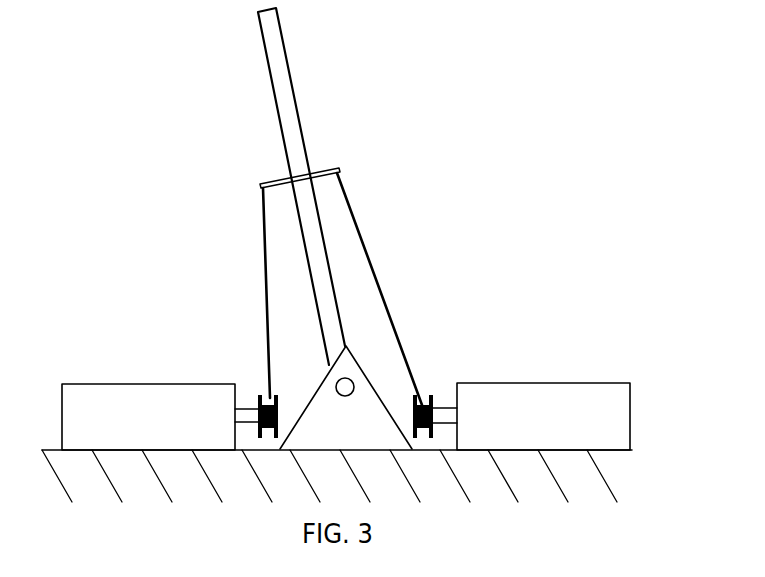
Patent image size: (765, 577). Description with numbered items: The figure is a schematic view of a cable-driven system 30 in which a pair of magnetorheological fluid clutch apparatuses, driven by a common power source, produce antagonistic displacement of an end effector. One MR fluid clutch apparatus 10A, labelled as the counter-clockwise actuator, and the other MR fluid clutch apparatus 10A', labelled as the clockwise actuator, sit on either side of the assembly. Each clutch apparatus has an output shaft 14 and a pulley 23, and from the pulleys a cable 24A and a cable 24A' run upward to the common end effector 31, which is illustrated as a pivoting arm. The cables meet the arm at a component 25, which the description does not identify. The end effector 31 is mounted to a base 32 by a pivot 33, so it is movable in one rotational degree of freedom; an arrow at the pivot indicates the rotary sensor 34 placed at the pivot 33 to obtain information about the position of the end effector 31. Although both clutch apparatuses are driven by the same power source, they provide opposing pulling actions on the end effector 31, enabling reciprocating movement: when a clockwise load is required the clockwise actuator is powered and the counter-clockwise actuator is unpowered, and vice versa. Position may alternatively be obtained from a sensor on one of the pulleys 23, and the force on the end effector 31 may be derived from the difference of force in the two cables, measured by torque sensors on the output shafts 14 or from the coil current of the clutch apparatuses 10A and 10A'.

The MR fluid clutch apparatus 10A is at (148, 389).
The MR fluid clutch apparatus 10A' is at (543, 373).
The output shaft 14 is at (236, 421).
The pulley 23 is at (258, 398).
The cable 24A is at (226, 293).
The cable 24A' is at (412, 289).
The cable attachment crossbar 25 is at (267, 183).
The cable-driven system 30 is at (410, 163).
The end effector 31 is at (290, 80).
The base 32 is at (352, 431).
The pivot 33 is at (337, 384).
The rotary sensor 34 is at (360, 392).